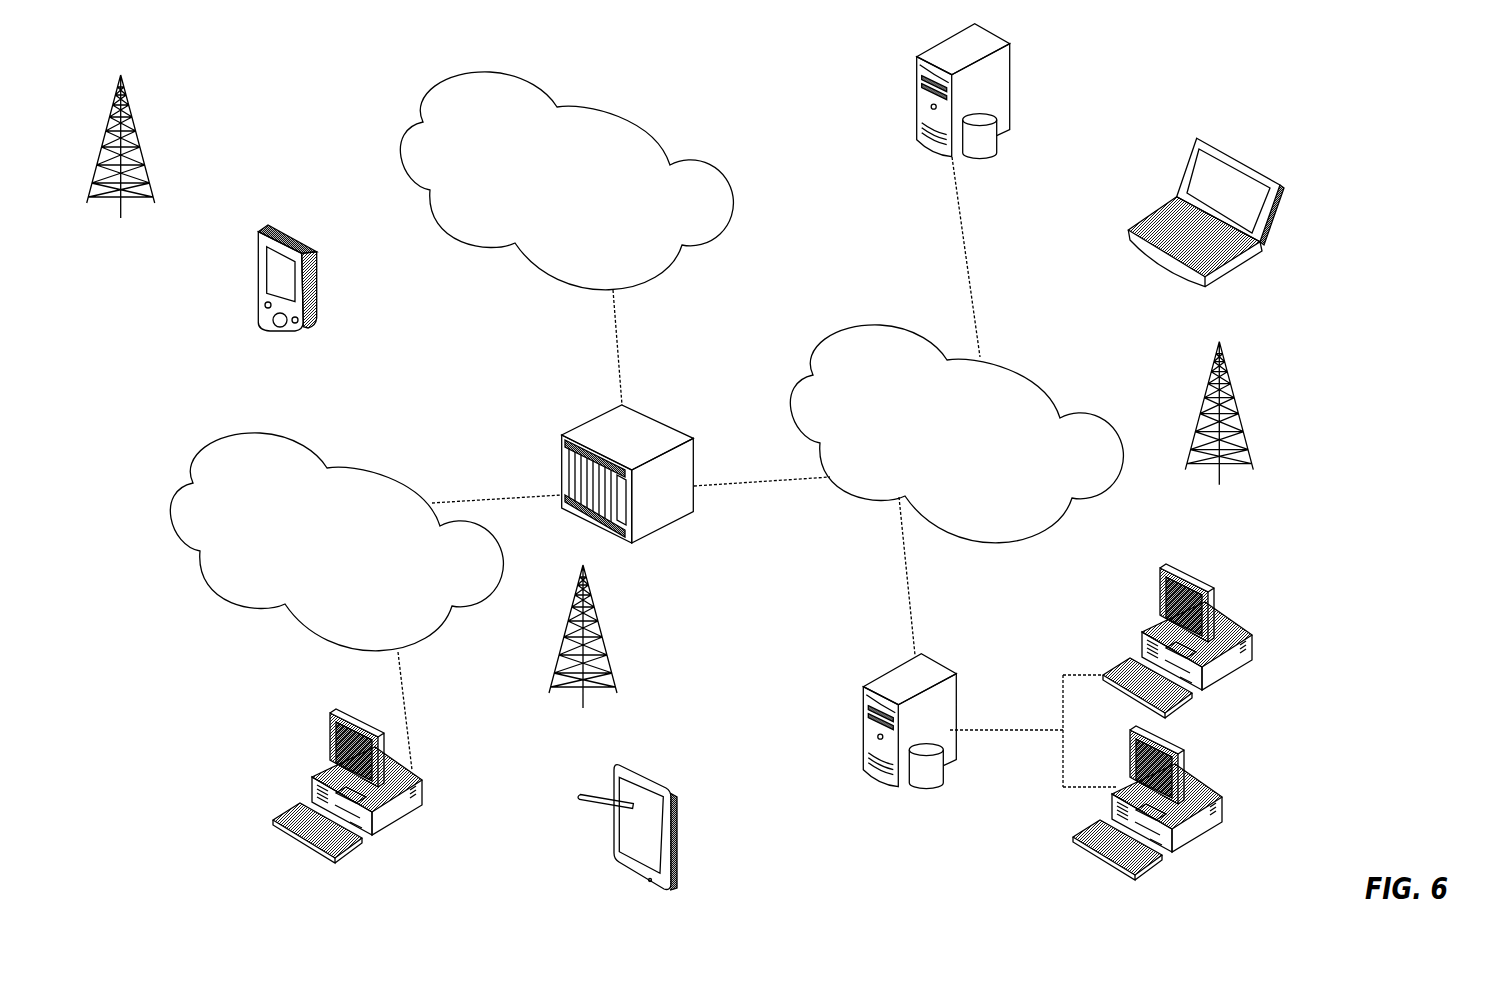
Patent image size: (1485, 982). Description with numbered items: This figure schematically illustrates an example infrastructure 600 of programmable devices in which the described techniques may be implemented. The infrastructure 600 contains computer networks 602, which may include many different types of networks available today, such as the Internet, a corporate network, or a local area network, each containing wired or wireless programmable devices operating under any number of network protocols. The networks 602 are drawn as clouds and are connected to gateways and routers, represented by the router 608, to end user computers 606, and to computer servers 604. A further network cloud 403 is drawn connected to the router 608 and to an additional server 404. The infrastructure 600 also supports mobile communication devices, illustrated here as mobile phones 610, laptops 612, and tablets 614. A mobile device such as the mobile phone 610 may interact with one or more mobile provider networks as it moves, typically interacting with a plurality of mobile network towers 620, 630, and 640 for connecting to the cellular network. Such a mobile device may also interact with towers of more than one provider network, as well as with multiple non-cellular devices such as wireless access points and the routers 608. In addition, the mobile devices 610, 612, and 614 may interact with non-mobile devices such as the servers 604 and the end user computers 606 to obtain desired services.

The infrastructure 600 is at (1107, 128).
The network cloud 403 is at (610, 107).
The server 404 is at (915, 78).
The computer networks 602 is at (308, 450).
The computer servers 604 is at (860, 705).
The end user computers 606 is at (1212, 592).
The gateways and routers 608 is at (653, 418).
The mobile phones 610 is at (293, 233).
The laptops 612 is at (1250, 167).
The tablets 614 is at (657, 773).
The mobile network tower 620 is at (583, 653).
The mobile network tower 630 is at (1219, 429).
The mobile network tower 640 is at (121, 163).